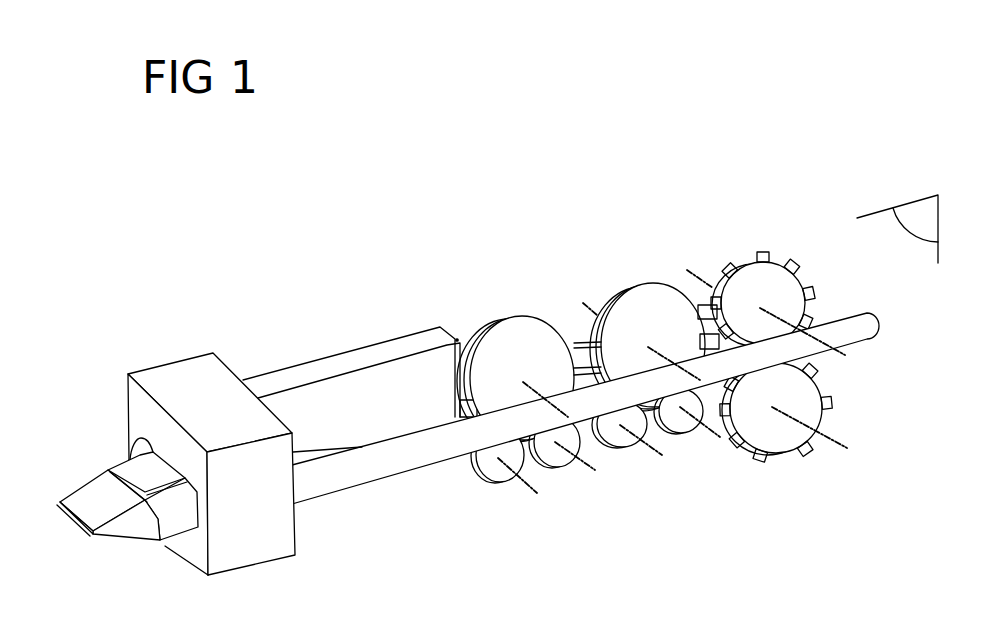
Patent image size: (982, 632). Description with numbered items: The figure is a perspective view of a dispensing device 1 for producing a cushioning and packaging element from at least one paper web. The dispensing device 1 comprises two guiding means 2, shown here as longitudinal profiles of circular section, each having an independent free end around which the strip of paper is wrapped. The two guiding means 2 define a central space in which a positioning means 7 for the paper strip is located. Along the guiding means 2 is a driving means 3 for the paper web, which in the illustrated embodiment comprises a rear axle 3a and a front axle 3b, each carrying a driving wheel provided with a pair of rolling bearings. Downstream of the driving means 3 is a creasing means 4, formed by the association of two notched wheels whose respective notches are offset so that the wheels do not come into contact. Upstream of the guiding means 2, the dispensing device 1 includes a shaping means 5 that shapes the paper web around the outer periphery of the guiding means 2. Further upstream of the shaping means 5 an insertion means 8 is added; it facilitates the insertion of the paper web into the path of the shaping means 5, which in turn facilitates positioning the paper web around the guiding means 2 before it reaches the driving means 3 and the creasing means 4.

The dispensing device 1 is at (733, 87).
The guiding means 2 is at (358, 488).
The driving means 3 is at (532, 142).
The rear axle 3a is at (498, 307).
The front axle 3b is at (632, 270).
The creasing means 4 is at (760, 233).
The shaping means 5 is at (192, 372).
The positioning means 7 is at (373, 333).
The insertion means 8 is at (72, 484).